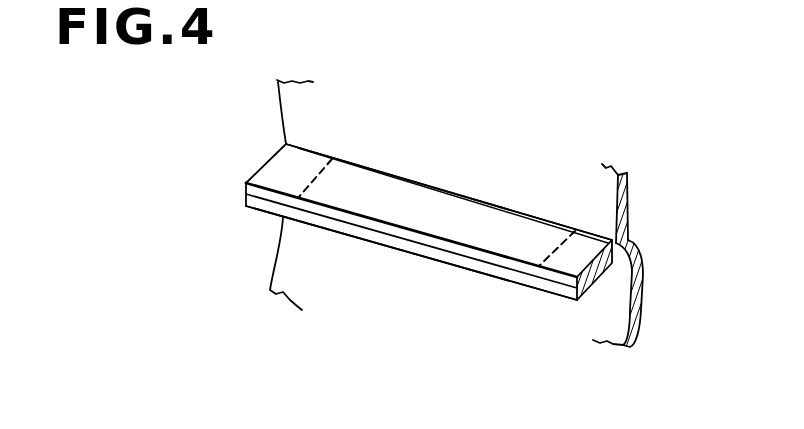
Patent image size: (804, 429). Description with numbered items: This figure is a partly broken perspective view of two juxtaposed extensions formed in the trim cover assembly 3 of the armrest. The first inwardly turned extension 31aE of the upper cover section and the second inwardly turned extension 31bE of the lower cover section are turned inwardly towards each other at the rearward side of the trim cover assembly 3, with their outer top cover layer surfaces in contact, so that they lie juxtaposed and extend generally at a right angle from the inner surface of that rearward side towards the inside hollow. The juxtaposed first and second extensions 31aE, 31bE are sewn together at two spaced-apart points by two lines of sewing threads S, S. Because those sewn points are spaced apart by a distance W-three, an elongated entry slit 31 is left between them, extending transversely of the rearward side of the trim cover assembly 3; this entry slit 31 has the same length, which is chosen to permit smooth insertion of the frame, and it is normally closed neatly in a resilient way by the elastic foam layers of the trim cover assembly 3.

The trim cover assembly 3 is at (282, 120).
The entry slit 31 is at (535, 322).
The sewing threads S is at (316, 171).
The first inwardly turned extension 31aE is at (412, 203).
The second inwardly turned extension 31bE is at (560, 300).